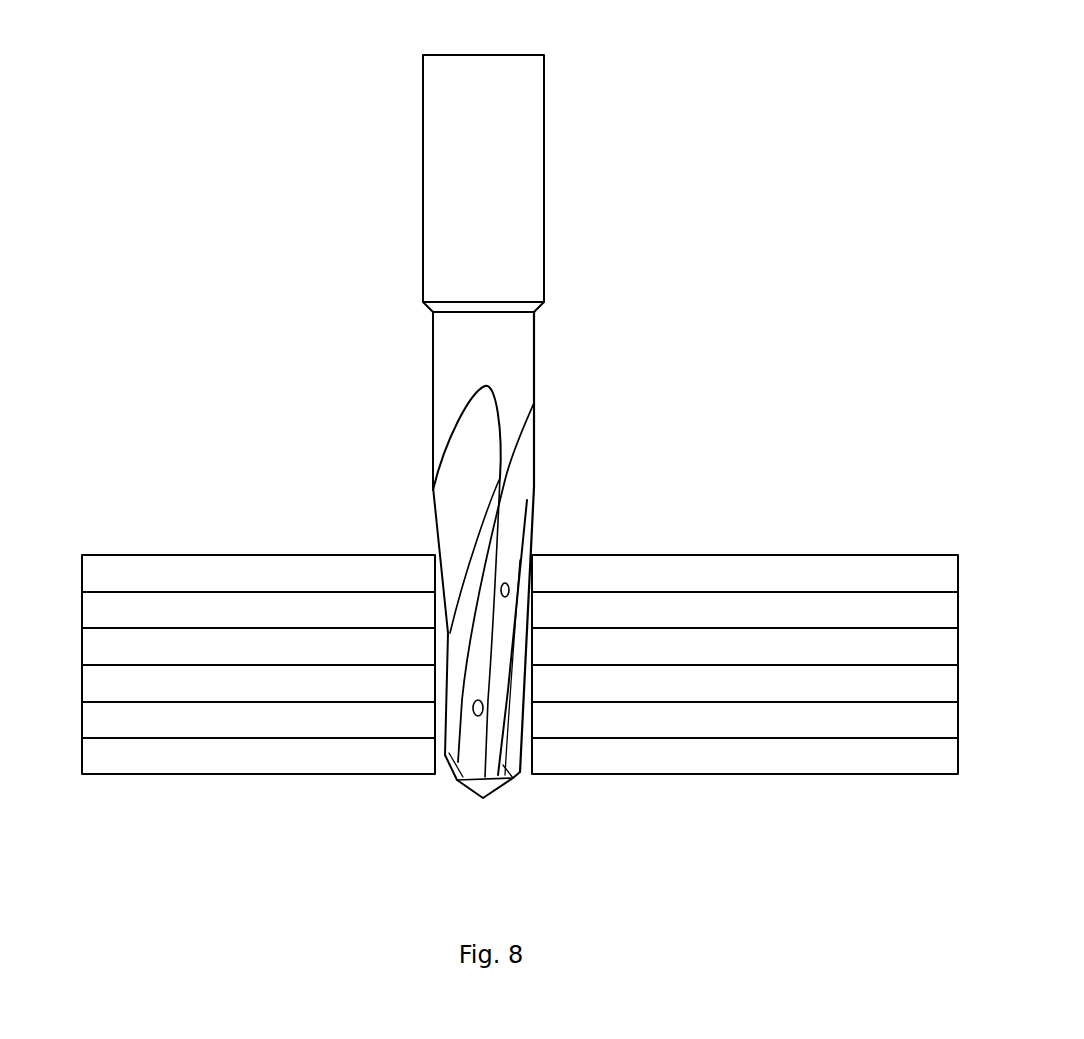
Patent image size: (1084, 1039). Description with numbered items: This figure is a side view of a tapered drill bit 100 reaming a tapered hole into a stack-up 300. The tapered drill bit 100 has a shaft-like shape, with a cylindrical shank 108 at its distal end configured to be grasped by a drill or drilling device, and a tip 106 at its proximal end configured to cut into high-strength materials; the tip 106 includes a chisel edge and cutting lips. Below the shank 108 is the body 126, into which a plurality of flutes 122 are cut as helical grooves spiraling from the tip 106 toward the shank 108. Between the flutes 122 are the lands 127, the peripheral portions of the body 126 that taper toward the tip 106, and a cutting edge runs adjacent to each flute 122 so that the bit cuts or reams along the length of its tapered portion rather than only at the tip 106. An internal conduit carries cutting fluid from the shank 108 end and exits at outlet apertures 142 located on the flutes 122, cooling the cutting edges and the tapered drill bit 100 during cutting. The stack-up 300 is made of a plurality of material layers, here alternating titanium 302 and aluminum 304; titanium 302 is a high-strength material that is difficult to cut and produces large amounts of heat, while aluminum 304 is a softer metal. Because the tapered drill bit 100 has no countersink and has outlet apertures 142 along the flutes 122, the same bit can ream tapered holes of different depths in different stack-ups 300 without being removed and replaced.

The tapered drill bit 100 is at (372, 90).
The tip 106 is at (482, 798).
The shank 108 is at (541, 222).
The flutes 122 is at (462, 448).
The body 126 is at (517, 350).
The lands 127 is at (500, 520).
The outlet aperture 142 is at (508, 582).
The stack-up 300 is at (178, 452).
The titanium 302 is at (287, 578).
The aluminum 304 is at (217, 615).